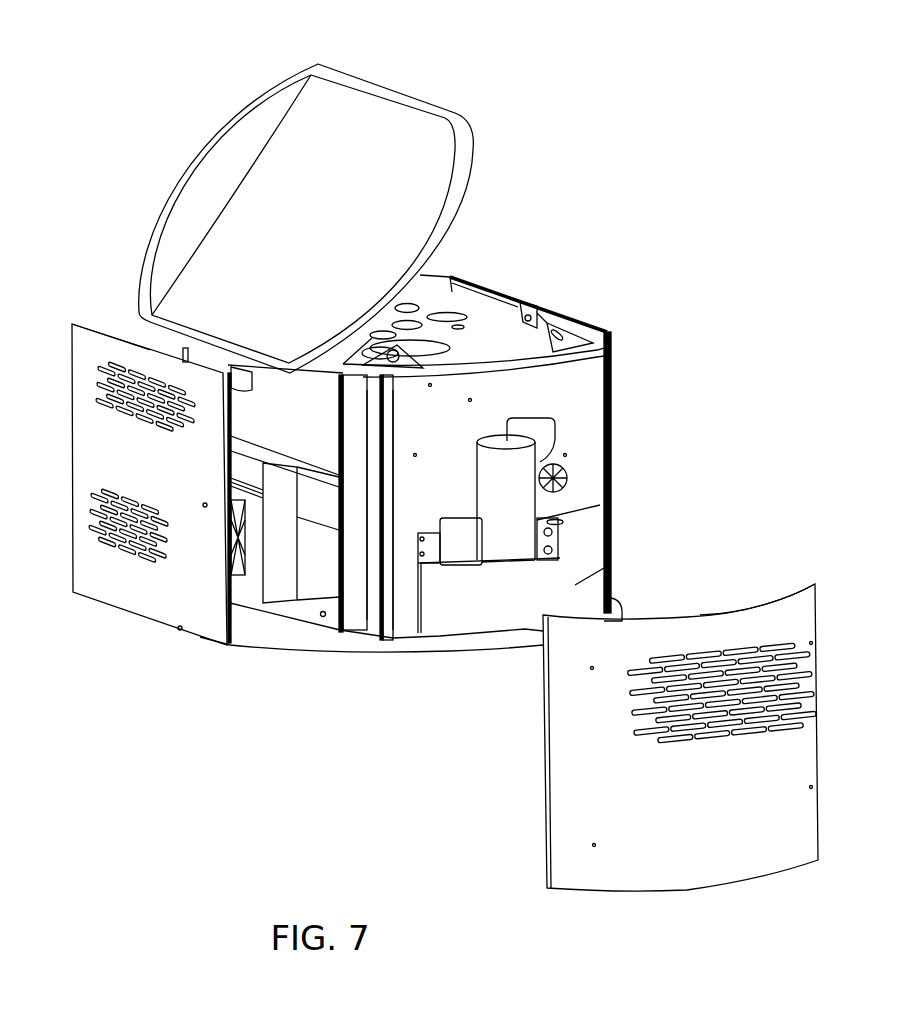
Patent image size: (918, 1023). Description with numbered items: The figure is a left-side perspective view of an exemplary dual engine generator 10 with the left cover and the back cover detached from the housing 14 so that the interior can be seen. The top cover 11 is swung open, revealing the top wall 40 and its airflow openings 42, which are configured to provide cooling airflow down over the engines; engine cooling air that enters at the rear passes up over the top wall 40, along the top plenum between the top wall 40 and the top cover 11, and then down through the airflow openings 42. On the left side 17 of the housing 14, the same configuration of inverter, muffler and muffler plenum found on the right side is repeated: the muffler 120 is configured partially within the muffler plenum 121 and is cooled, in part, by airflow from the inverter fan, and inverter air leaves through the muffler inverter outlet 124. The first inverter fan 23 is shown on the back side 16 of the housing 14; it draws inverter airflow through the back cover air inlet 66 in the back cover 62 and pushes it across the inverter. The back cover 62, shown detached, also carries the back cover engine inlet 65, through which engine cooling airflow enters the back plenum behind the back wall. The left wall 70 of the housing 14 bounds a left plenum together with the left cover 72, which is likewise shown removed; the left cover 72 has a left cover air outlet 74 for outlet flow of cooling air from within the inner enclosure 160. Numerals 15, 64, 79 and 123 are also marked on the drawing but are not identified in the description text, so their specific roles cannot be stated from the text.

The dual engine generator 10 is at (224, 92).
The top cover 11 is at (400, 140).
The housing 14 is at (593, 343).
The frame top member 15 is at (563, 313).
The back side 16 is at (107, 453).
The left side 17 is at (645, 843).
The first inverter fan 23 is at (238, 593).
The top wall 40 is at (515, 333).
The airflow openings 42 is at (487, 323).
The back cover 62 is at (103, 343).
The lower vent slots 64 is at (93, 507).
The back cover engine inlet 65 is at (107, 390).
The back cover air inlet 66 is at (113, 547).
The left wall 70 is at (573, 397).
The left cover 72 is at (770, 614).
The left cover air outlet 74 is at (728, 687).
The fan 79 is at (543, 476).
The muffler 120 is at (497, 463).
The muffler plenum 121 is at (593, 578).
The mounting slot 123 is at (562, 521).
The muffler inverter outlet 124 is at (515, 560).
The inner enclosure 160 is at (500, 292).